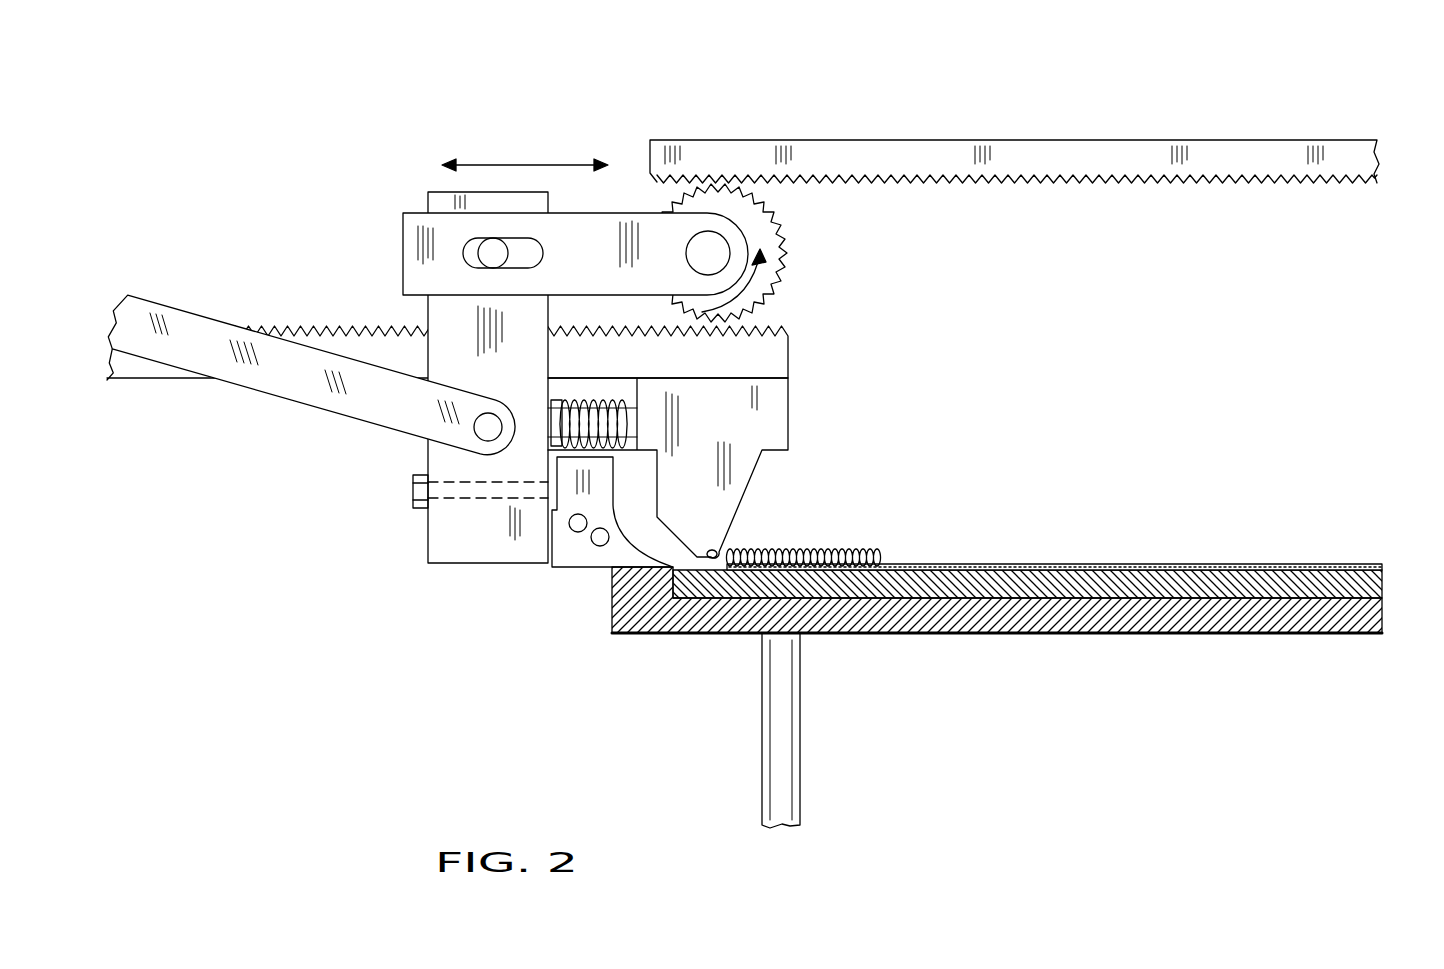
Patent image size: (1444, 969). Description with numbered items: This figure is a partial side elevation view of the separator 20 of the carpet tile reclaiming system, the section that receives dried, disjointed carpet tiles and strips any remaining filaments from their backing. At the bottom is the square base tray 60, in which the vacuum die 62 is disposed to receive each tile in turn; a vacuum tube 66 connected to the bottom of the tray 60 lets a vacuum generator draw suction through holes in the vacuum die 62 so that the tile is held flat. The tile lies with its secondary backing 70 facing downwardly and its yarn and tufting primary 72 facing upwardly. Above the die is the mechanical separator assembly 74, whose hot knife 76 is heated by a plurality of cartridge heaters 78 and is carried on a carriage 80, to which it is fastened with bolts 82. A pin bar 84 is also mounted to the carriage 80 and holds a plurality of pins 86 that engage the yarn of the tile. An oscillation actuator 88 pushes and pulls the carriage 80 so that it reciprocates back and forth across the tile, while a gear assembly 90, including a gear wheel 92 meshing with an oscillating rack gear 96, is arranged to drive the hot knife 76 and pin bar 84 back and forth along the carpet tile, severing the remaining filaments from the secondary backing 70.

The separator 20 is at (896, 117).
The base tray 60 is at (1243, 633).
The vacuum die 62 is at (1380, 587).
The vacuum tube 66 is at (800, 747).
The secondary backing 70 is at (1183, 580).
The yarn and tufting primary 72 is at (852, 547).
The mechanical separator assembly 74 is at (390, 423).
The hot knife 76 is at (602, 555).
The cartridge heaters 78 is at (600, 548).
The carriage 80 is at (443, 462).
The bolts 82 is at (415, 488).
The pin bar 84 is at (788, 425).
The pins 86 is at (722, 552).
The oscillation actuator 88 is at (210, 317).
The gear assembly 90 is at (632, 152).
The gear wheel 92 is at (787, 263).
The oscillating rack gear 96 is at (1060, 188).